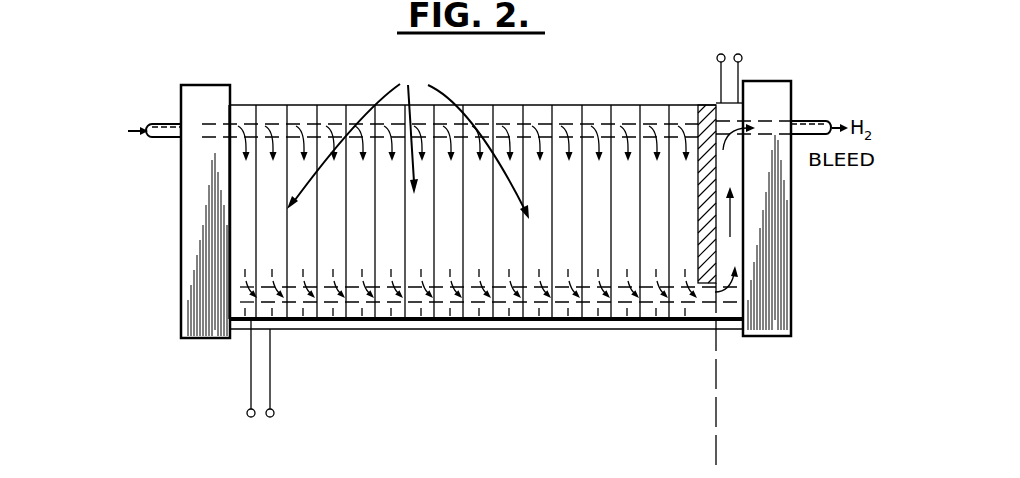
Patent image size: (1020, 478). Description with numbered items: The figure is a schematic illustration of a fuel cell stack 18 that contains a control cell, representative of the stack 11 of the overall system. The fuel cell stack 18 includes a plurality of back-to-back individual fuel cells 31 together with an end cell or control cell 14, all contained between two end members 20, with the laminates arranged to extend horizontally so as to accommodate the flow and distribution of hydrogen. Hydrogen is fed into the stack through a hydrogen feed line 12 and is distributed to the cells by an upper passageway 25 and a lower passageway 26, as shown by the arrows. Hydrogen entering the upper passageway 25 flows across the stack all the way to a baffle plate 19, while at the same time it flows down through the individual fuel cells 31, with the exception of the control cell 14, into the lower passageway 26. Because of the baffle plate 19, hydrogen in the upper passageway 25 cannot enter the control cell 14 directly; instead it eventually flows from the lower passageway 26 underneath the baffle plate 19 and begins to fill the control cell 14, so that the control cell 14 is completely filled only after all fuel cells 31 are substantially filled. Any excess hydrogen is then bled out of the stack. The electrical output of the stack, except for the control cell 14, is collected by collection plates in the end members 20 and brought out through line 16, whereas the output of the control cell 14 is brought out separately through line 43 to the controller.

The stack 11 is at (289, 90).
The hydrogen feed line 12 is at (162, 126).
The end cell or control cell 14 is at (733, 212).
The line 16 is at (293, 425).
The fuel cell stack 18 is at (496, 243).
The baffle plate 19 is at (707, 242).
The end members 20 is at (197, 92).
The upper passageway 25 is at (599, 125).
The lower passageway 26 is at (230, 348).
The fuel cells 31 is at (393, 310).
The line 43 is at (752, 50).